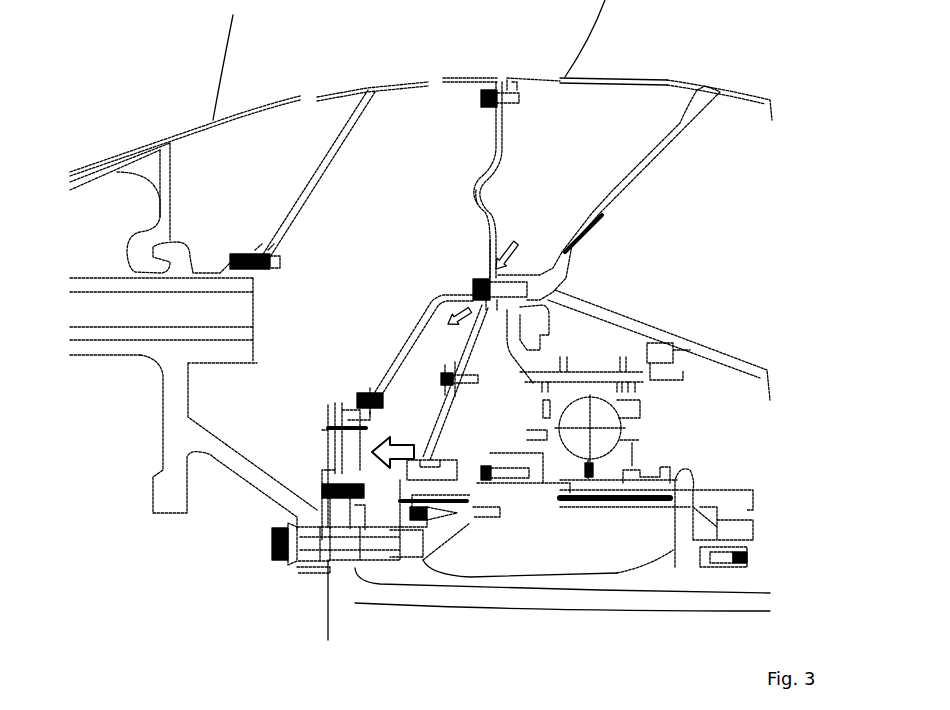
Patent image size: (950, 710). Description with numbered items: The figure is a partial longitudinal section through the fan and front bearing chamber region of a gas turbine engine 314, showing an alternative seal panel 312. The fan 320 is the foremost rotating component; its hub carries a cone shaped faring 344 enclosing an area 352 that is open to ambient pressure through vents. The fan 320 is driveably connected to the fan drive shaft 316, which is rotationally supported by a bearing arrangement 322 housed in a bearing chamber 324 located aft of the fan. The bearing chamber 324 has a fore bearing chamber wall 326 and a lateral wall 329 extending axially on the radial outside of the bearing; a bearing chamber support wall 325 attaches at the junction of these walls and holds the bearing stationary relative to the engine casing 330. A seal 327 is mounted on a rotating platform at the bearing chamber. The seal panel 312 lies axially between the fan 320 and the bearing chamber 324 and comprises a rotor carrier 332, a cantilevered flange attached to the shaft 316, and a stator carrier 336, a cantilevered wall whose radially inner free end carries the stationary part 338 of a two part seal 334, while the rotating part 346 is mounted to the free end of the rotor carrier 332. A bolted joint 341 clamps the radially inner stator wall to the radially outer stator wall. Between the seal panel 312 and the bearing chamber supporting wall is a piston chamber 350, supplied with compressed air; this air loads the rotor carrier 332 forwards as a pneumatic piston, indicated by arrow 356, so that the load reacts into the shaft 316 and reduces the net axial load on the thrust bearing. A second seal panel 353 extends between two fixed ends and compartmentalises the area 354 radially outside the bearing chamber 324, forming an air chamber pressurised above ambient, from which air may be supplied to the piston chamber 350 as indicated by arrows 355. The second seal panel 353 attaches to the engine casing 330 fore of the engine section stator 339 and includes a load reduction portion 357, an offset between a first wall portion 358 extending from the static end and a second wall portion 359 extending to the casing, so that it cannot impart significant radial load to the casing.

The seal panel 312 is at (345, 340).
The gas turbine engine 314 is at (675, 225).
The fan drive shaft 316 is at (562, 600).
The fan 320 is at (185, 144).
The bearing arrangement 322 is at (678, 418).
The bearing chamber 324 is at (545, 416).
The bearing chamber support wall 325 is at (612, 198).
The fore bearing chamber wall 326 is at (423, 483).
The seal 327 is at (428, 460).
The lateral wall 329 is at (632, 322).
The engine casing 330 is at (640, 80).
The rotor carrier 332 is at (338, 453).
The seal 334 is at (326, 423).
The stator carrier 336 is at (425, 318).
The stationary part 338 is at (350, 400).
The engine section stator 339 is at (719, 72).
The joint 341 is at (362, 393).
The cone shaped faring 344 is at (340, 93).
The rotating part 346 is at (353, 497).
The piston chamber 350 is at (445, 382).
The area within the fan cone faring 352 is at (329, 294).
The second seal panel 353 is at (462, 140).
The area radially outside of the bearing chamber 354 is at (532, 239).
The arrows 355 is at (511, 248).
The arrow 356 is at (412, 450).
The load reduction portion 357 is at (476, 186).
The first wall portion 358 is at (488, 234).
The second wall portion 359 is at (503, 125).